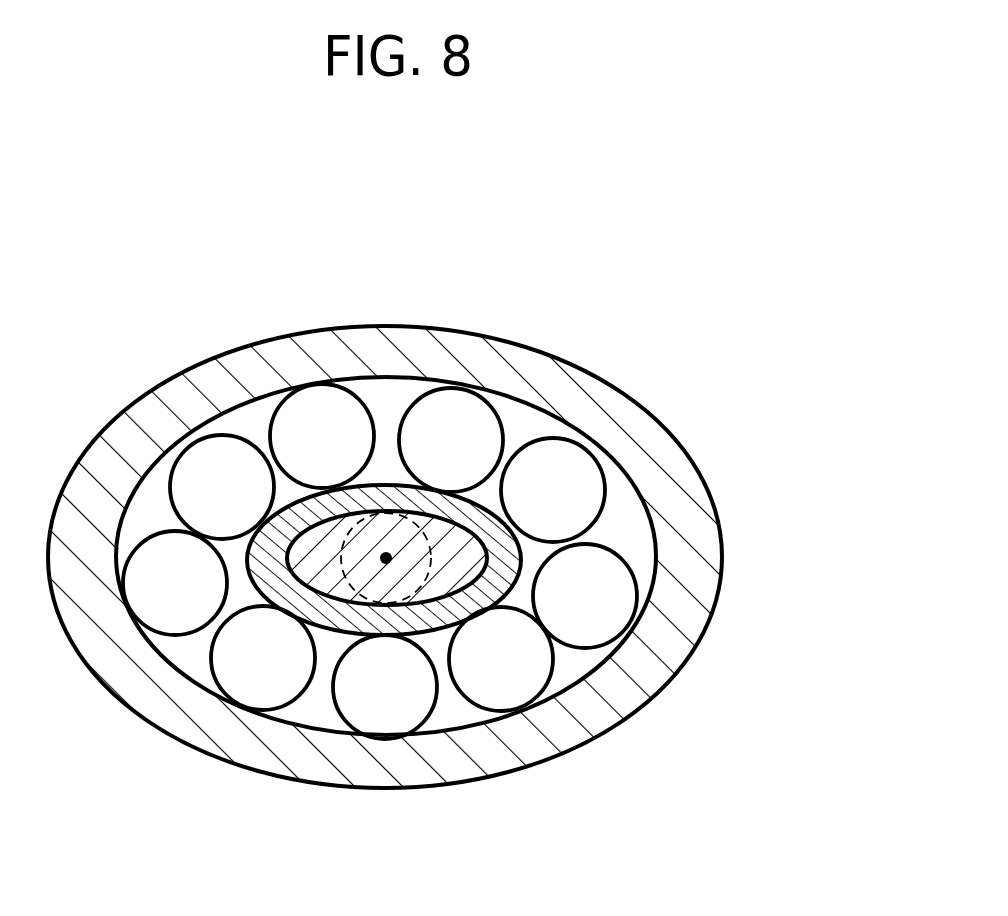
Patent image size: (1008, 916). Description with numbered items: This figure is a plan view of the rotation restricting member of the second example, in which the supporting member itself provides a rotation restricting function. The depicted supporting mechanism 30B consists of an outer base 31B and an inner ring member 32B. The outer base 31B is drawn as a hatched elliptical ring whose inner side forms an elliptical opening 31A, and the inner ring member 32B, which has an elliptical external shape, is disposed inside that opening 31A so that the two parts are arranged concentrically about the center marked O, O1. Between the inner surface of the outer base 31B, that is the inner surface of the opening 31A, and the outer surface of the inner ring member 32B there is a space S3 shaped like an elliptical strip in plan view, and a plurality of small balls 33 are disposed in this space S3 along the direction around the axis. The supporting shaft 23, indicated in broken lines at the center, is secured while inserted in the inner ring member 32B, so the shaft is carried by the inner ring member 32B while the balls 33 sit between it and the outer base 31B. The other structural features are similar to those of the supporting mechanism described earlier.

The supporting mechanism 30B is at (733, 235).
The opening 31A is at (617, 527).
The outer base 31B is at (678, 487).
The inner ring member 32B is at (490, 527).
The small balls 33 is at (217, 460).
The supporting shaft 23 is at (352, 592).
The center of bearing O is at (462, 719).
The center of shaft O1 is at (386, 558).
The space S3 is at (572, 665).